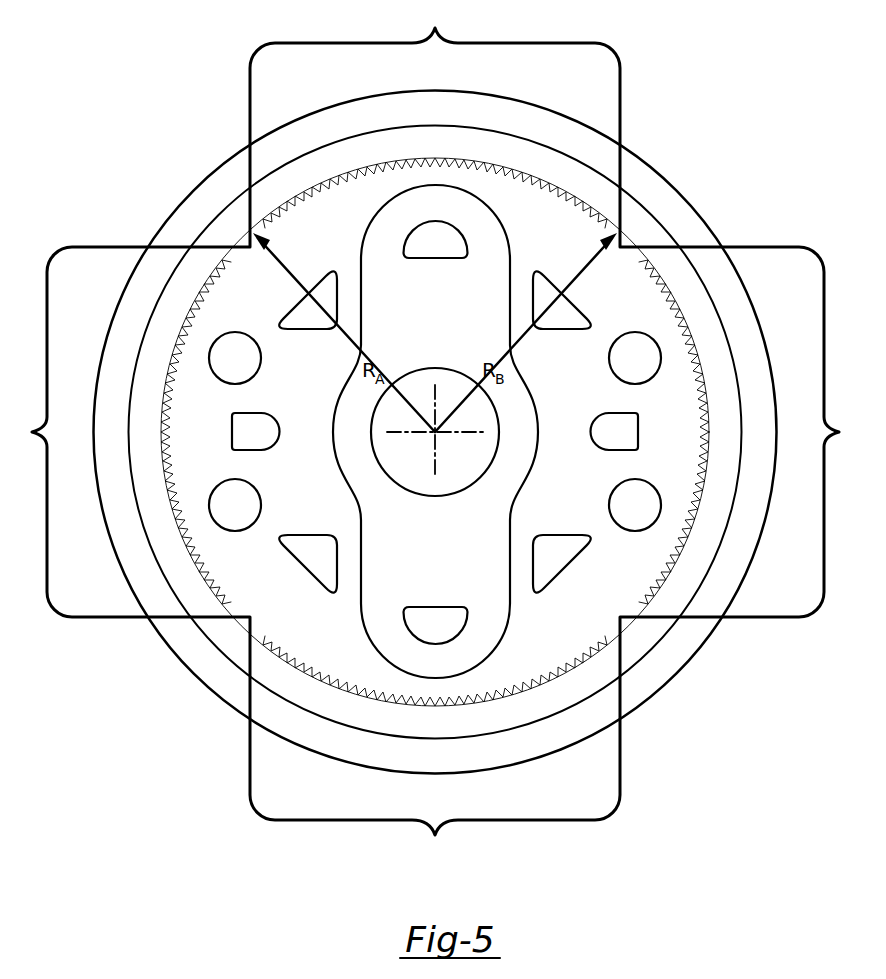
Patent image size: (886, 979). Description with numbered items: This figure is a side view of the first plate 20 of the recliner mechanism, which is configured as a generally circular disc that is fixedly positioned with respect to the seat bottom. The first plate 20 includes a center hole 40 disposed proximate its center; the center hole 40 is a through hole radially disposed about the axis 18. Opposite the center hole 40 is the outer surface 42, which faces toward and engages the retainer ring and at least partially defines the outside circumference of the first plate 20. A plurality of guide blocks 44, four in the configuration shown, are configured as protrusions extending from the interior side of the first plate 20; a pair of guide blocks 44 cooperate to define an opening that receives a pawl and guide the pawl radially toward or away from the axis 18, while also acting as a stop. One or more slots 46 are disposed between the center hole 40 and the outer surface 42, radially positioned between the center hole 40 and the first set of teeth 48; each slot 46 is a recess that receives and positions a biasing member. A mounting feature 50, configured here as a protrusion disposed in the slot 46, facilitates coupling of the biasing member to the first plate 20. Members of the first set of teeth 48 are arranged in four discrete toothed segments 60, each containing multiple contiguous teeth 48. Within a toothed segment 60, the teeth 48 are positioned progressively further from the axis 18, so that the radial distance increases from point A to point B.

The axis 18 is at (435, 432).
The first plate 20 is at (220, 168).
The center hole 40 is at (460, 468).
The outer surface 42 is at (107, 341).
The guide blocks 44 is at (283, 322).
The slot 46 is at (423, 324).
The first set of teeth 48 is at (696, 485).
The mounting feature 50 is at (425, 254).
The toothed segment 60 is at (435, 432).